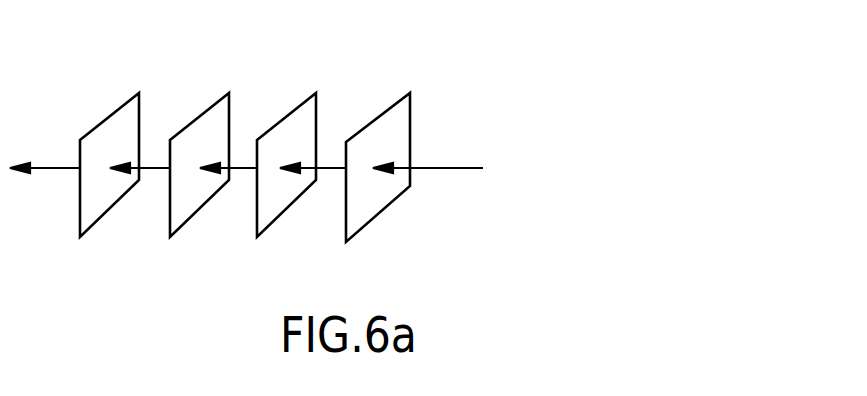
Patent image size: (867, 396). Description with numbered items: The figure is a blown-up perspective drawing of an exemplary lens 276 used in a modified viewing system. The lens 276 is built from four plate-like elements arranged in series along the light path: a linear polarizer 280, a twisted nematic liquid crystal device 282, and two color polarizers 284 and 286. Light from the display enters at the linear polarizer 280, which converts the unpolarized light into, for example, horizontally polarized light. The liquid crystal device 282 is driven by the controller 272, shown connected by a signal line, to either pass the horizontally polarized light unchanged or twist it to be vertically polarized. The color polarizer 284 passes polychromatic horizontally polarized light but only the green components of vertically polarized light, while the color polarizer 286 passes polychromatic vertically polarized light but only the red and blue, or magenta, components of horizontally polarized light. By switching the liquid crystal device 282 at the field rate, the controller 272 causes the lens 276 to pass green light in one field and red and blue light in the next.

The lens 276 is at (210, 73).
The linear polarizer 280 is at (354, 240).
The twisted nematic liquid crystal device 282 is at (263, 236).
The color polarizer 284 is at (176, 236).
The color polarizer 286 is at (84, 236).
The controller 272 is at (529, 81).